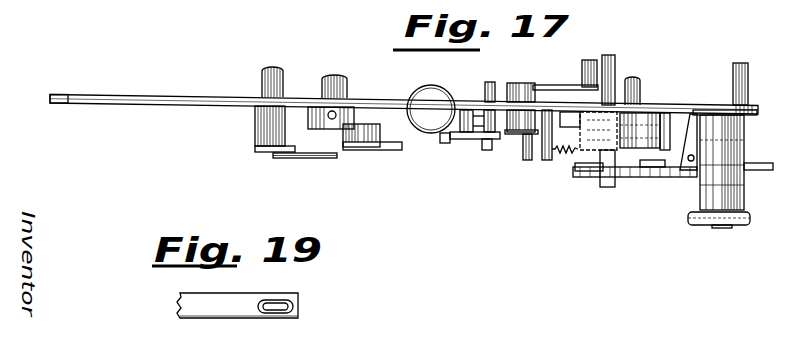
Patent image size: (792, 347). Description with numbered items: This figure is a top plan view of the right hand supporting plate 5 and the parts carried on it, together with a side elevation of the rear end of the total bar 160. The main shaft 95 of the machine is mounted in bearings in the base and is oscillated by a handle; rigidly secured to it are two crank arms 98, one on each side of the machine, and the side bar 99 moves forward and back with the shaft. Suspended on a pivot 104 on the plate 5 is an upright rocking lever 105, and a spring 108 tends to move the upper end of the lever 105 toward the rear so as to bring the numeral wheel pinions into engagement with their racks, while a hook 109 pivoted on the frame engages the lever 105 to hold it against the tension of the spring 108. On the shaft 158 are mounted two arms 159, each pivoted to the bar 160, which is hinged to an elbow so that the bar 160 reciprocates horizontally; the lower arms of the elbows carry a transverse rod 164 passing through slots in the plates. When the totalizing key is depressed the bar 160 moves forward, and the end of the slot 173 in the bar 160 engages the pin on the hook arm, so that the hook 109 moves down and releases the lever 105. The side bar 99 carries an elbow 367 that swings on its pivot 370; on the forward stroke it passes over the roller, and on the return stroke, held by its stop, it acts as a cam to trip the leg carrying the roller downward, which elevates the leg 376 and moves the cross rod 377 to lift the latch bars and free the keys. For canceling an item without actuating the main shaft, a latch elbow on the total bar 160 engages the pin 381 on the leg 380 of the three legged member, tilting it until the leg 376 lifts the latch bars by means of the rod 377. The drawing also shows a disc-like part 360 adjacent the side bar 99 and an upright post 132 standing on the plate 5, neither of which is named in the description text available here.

In FIG. 17, the plate 5 is at (395, 103).
In FIG. 17, the shaft 158 is at (268, 67).
In FIG. 17, the arm 159 is at (270, 153).
In FIG. 17, the bar 160 is at (312, 158).
In FIG. 19, the bar 160 is at (237, 305).
In FIG. 17, the main shaft 95 is at (340, 75).
In FIG. 17, the crank arm 98 is at (331, 127).
In FIG. 17, the bar 99 is at (388, 150).
In FIG. 17, the disc 360 is at (430, 100).
In FIG. 17, the pivot 370 is at (487, 90).
In FIG. 17, the leg 376 is at (543, 80).
In FIG. 17, the elbow 367 is at (473, 140).
In FIG. 17, the leg 380 is at (518, 134).
In FIG. 17, the pin 381 is at (526, 160).
In FIG. 17, the spring 108 is at (557, 160).
In FIG. 17, the cross rod 377 is at (586, 60).
In FIG. 17, the post 132 is at (613, 63).
In FIG. 17, the transverse rod 164 is at (640, 82).
In FIG. 17, the pivot 104 is at (653, 115).
In FIG. 17, the hook 109 is at (693, 113).
In FIG. 17, the rocking lever 105 is at (648, 174).
In FIG. 19, the slot 173 is at (283, 300).